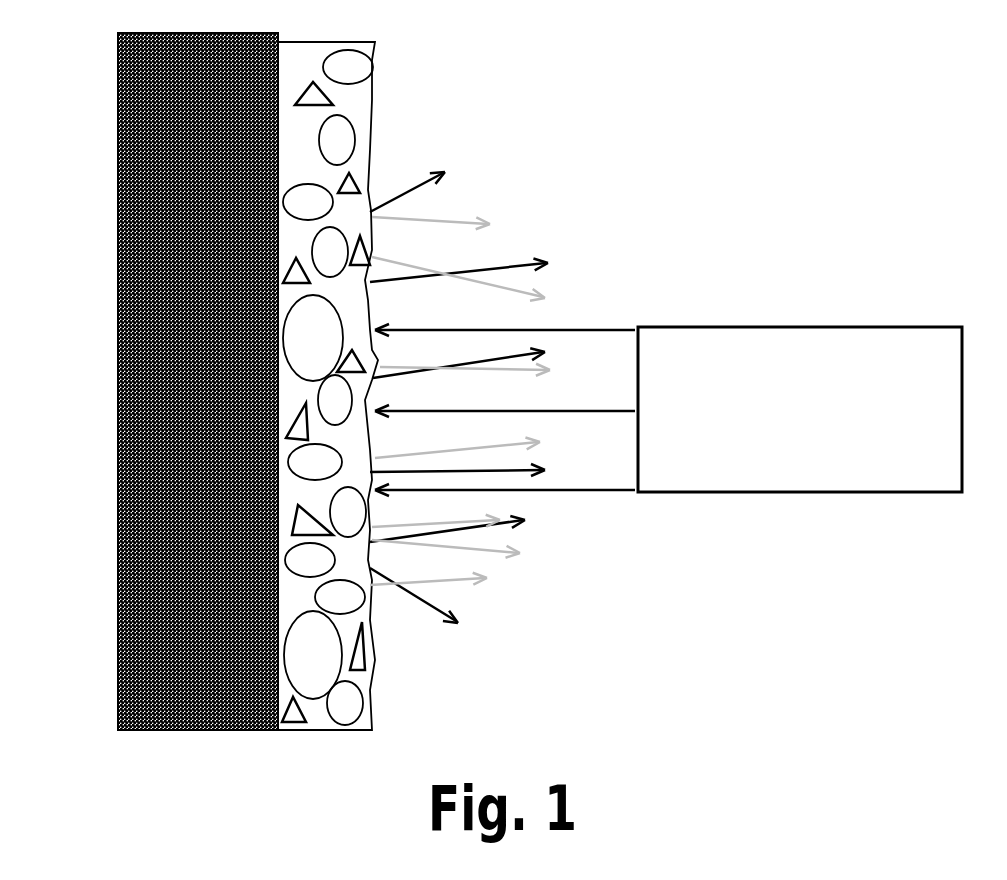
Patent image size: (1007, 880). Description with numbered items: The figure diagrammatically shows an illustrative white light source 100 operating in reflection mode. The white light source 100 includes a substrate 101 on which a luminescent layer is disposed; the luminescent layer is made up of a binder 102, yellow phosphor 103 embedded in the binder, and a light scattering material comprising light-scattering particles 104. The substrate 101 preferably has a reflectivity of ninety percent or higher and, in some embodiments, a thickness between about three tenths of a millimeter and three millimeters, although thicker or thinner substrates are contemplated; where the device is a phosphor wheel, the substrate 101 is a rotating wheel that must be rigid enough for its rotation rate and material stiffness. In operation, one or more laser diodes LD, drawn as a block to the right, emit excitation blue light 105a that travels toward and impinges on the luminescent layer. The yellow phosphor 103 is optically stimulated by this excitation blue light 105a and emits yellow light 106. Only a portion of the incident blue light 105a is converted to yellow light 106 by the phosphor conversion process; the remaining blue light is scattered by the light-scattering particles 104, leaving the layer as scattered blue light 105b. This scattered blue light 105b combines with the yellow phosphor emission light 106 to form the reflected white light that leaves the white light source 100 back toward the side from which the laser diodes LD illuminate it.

The white light source 100 is at (487, 376).
The substrate 101 is at (150, 118).
The binder 102 is at (416, 382).
The yellow phosphor 103 is at (439, 59).
The light-scattering particles 104 is at (452, 181).
The excitation blue light 105a is at (531, 444).
The scattered blue light 105b is at (504, 487).
The yellow light 106 is at (491, 256).
The laser diodes LD is at (781, 325).